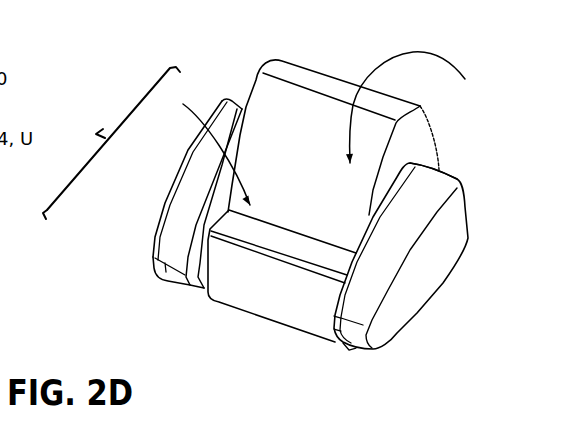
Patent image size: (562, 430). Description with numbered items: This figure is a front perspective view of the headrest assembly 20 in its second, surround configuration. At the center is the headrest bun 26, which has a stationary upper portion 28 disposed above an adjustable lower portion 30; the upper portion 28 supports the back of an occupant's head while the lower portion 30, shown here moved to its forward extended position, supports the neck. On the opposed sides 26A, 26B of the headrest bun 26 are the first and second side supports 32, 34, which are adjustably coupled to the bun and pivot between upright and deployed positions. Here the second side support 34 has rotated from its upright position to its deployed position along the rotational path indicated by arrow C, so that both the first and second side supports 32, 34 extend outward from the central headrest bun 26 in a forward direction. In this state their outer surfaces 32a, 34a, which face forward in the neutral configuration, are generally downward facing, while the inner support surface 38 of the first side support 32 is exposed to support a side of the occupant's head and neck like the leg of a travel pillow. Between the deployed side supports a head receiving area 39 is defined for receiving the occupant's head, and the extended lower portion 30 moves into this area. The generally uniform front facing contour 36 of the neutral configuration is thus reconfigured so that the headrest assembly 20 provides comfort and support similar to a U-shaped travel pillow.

The headrest assembly 20 is at (444, 108).
The headrest bun 26 is at (347, 77).
The first side of headrest bun 26A is at (230, 103).
The second side of headrest bun 26B is at (424, 170).
The upper portion 28 is at (298, 120).
The lower portion 30 is at (240, 288).
The first side support 32 is at (159, 213).
The outer surface of first side support 32a is at (198, 282).
The second side support 34 is at (422, 258).
The outer surface of second side support 34a is at (383, 348).
The front facing contour 36 is at (111, 143).
The inner support surface 38 is at (162, 274).
The head receiving area 39 is at (206, 148).
The arrow C is at (419, 51).